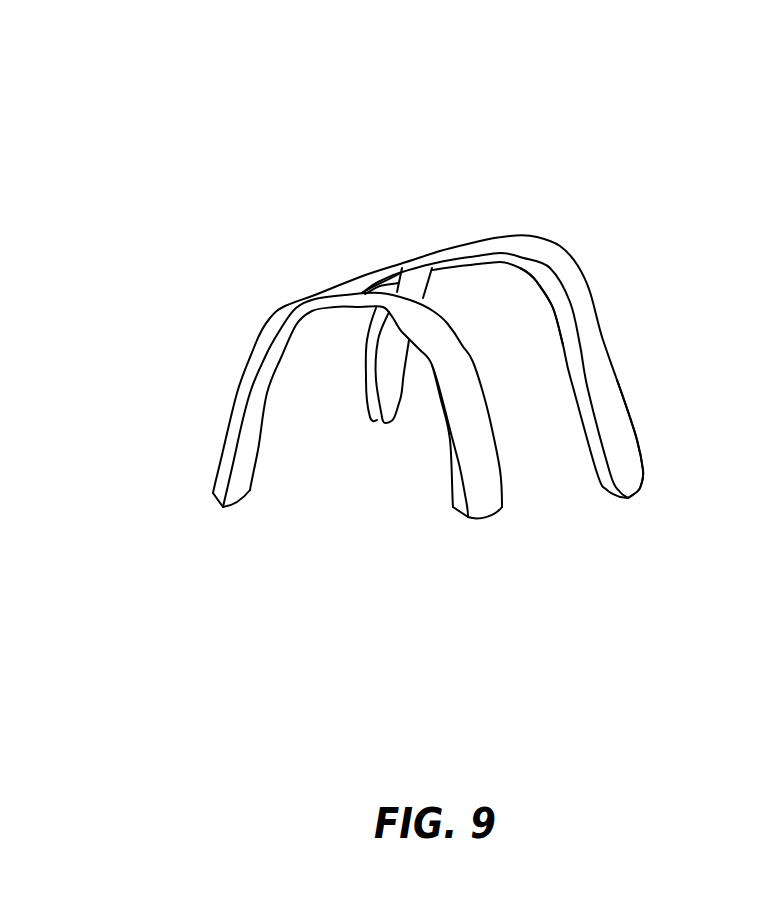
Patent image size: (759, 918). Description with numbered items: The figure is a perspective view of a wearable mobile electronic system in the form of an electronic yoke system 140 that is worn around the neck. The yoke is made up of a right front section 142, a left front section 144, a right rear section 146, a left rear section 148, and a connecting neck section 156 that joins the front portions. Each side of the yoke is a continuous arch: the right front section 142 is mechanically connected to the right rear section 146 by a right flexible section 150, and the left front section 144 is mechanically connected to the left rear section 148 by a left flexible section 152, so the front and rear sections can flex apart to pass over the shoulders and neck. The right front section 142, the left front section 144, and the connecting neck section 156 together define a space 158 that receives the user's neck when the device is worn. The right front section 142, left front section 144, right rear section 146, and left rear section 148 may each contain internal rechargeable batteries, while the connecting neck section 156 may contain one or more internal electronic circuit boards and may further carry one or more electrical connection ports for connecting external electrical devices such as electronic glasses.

The electronic yoke system 140 is at (414, 127).
The right front section 142 is at (481, 512).
The left front section 144 is at (632, 463).
The right rear section 146 is at (217, 473).
The left rear section 148 is at (382, 420).
The right flexible section 150 is at (345, 297).
The left flexible section 152 is at (537, 235).
The connecting neck section 156 is at (385, 263).
The space 158 is at (463, 296).